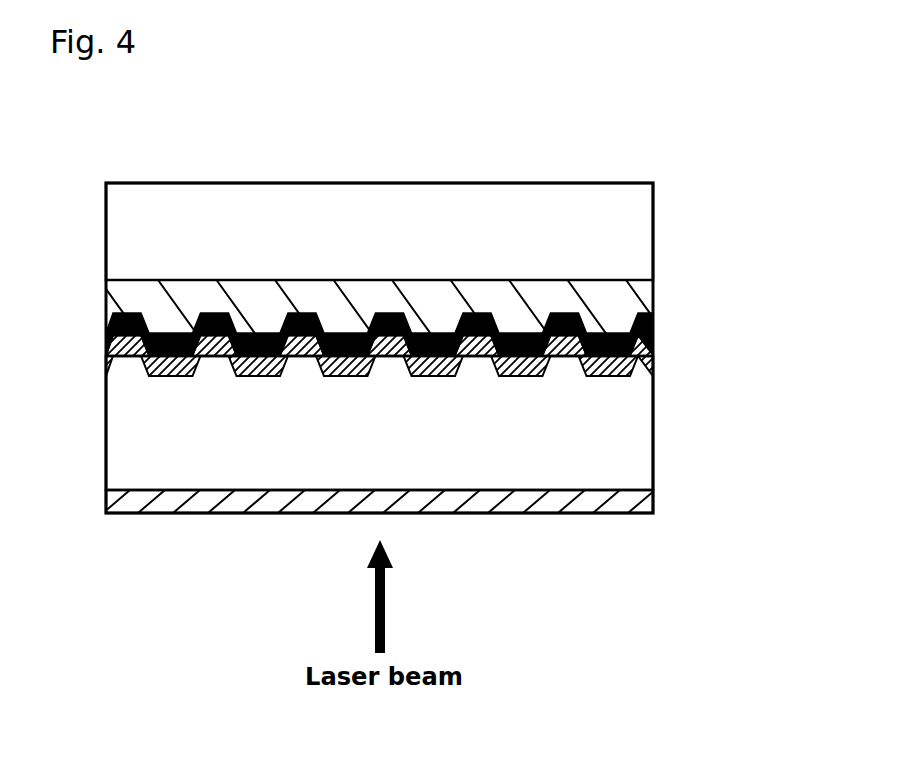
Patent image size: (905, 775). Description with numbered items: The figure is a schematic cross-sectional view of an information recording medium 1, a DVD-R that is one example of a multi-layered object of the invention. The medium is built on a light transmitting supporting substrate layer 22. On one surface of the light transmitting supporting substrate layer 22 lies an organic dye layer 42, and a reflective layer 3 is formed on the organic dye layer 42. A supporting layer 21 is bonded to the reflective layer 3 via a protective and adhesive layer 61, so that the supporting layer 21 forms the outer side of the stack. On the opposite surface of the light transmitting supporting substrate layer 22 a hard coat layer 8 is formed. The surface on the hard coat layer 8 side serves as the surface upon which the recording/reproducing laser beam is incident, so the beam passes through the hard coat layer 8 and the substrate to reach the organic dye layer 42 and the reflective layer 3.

The optical information recording medium 1 is at (363, 152).
The supporting layer 21 is at (613, 217).
The protective and adhesive layer 61 is at (628, 300).
The reflective layer 3 is at (645, 328).
The organic dye layer 42 is at (650, 355).
The light transmitting supporting substrate layer 22 is at (628, 453).
The hard coat layer 8 is at (625, 503).